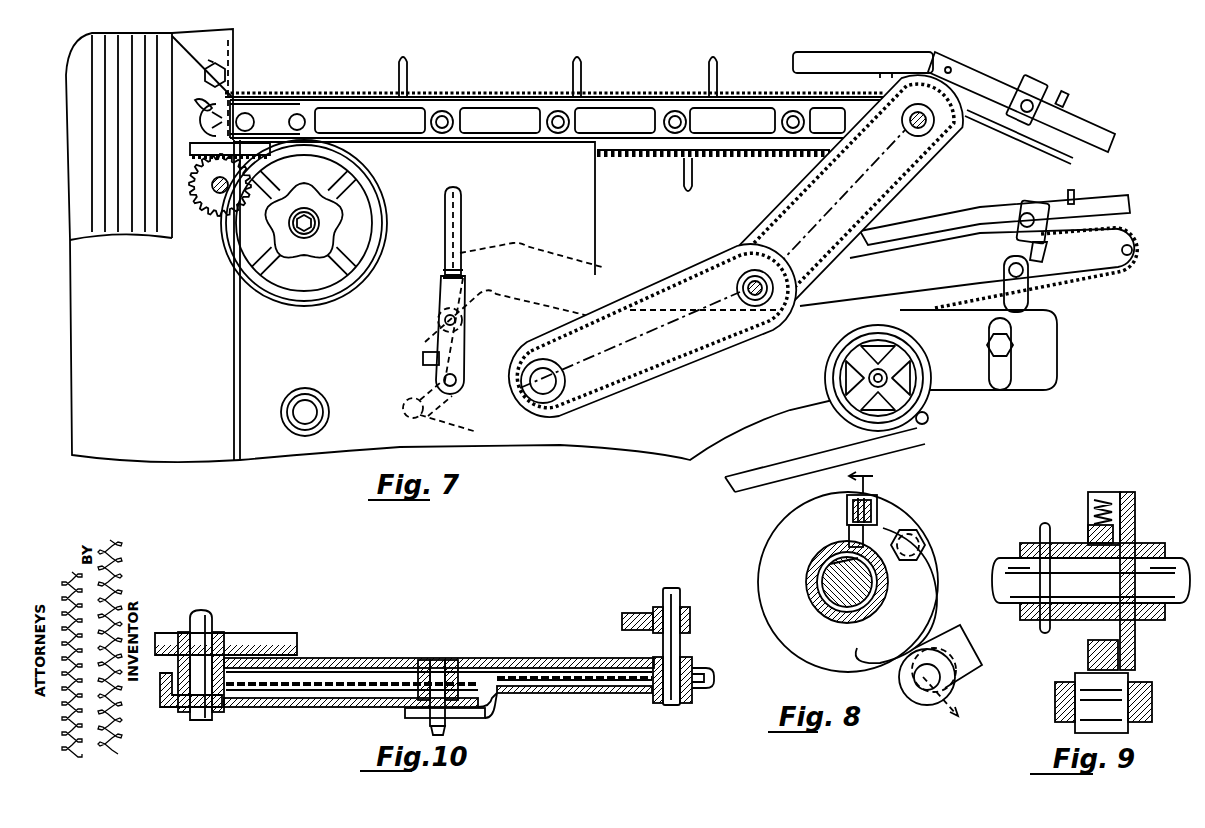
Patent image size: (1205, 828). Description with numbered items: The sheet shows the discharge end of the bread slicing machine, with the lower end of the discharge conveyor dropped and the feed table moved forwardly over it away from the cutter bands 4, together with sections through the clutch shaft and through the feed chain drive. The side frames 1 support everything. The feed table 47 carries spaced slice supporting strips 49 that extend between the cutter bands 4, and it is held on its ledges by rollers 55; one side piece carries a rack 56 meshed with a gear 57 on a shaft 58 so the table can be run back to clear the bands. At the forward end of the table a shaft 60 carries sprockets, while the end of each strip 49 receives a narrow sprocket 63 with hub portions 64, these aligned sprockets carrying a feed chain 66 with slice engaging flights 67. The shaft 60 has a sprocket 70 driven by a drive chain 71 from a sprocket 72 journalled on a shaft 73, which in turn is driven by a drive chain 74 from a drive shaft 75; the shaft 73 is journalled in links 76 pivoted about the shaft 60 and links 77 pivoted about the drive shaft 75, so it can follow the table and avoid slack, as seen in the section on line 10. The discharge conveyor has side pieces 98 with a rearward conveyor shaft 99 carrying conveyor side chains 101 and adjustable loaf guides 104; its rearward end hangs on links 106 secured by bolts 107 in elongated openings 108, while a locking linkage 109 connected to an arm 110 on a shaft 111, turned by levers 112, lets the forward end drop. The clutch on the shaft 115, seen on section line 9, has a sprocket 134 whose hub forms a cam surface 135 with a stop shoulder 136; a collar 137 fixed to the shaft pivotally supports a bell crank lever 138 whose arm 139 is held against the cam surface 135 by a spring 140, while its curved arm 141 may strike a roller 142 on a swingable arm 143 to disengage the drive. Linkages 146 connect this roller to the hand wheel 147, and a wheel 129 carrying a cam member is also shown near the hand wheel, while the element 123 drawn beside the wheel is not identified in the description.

In FIG. 7, the side frames 1 is at (460, 301).
In FIG. 10, the side frames 1 is at (262, 634).
In FIG. 7, the cutter bands 4 is at (115, 238).
In FIG. 8, the section line 9— 9 is at (917, 599).
In FIG. 7, the section line 10— 10 is at (978, 32).
In FIG. 7, the feed table 47 is at (555, 117).
In FIG. 10, the feed table 47 is at (628, 612).
In FIG. 7, the slice supporting strips 49 is at (270, 100).
In FIG. 7, the rollers 55 is at (211, 89).
In FIG. 7, the rack 56 is at (200, 163).
In FIG. 7, the gear 57 is at (210, 195).
In FIG. 7, the shaft 58 is at (218, 214).
In FIG. 7, the shaft 60 is at (930, 132).
In FIG. 10, the shaft 60 is at (682, 636).
In FIG. 7, the narrow sprocket 63 is at (210, 131).
In FIG. 7, the hub or shaft portions 64 is at (250, 113).
In FIG. 7, the feed chain 66 is at (620, 94).
In FIG. 7, the slice engaging flights 67 is at (200, 112).
In FIG. 10, the sprocket 70 is at (702, 672).
In FIG. 7, the drive chain 71 is at (820, 266).
In FIG. 10, the drive chain 71 is at (595, 694).
In FIG. 10, the sprocket 72 is at (432, 664).
In FIG. 7, the shaft 73 is at (748, 280).
In FIG. 10, the shaft 73 is at (452, 668).
In FIG. 7, the drive chain 74 is at (640, 382).
In FIG. 10, the drive chain 74 is at (320, 698).
In FIG. 7, the drive shaft 75 is at (543, 381).
In FIG. 10, the drive shaft 75 is at (200, 718).
In FIG. 10, the links 76 is at (545, 666).
In FIG. 10, the links 77 is at (352, 660).
In FIG. 7, the side pieces 98 is at (905, 288).
In FIG. 7, the rearward conveyor shaft 99 is at (1146, 242).
In FIG. 7, the conveyor side chains 101 is at (1122, 277).
In FIG. 7, the loaf guides 104 is at (943, 232).
In FIG. 7, the links 106 is at (1032, 290).
In FIG. 7, the bolts 107 is at (992, 346).
In FIG. 7, the openings 108 is at (1000, 370).
In FIG. 7, the locking linkage 109 is at (428, 344).
In FIG. 7, the arm 110 is at (440, 413).
In FIG. 7, the shaft 111 is at (463, 376).
In FIG. 7, the levers 112 is at (466, 234).
In FIG. 7, the shaft 115 is at (298, 402).
In FIG. 8, the shaft 115 is at (836, 602).
In FIG. 9, the shaft 115 is at (1091, 580).
In FIG. 7, the handwheel 123 is at (324, 299).
In FIG. 7, the wheel 129 is at (296, 200).
In FIG. 9, the sprocket 134 is at (1040, 545).
In FIG. 8, the cam surface 135 is at (888, 590).
In FIG. 8, the stop shoulder 136 is at (848, 540).
In FIG. 8, the collar 137 is at (778, 550).
In FIG. 9, the collar 137 is at (1140, 552).
In FIG. 8, the bell crank lever 138 is at (928, 560).
In FIG. 8, the arm 139 is at (882, 532).
In FIG. 9, the arm 139 is at (1090, 530).
In FIG. 9, the spring 140 is at (1110, 495).
In FIG. 8, the arm 141 is at (925, 642).
In FIG. 9, the arm 141 is at (1088, 660).
In FIG. 8, the roller 142 is at (902, 700).
In FIG. 9, the roller 142 is at (1075, 725).
In FIG. 8, the swingable arm 143 is at (968, 670).
In FIG. 9, the swingable arm 143 is at (1135, 722).
In FIG. 7, the linkages 146 is at (765, 468).
In FIG. 7, the hand wheel 147 is at (931, 400).